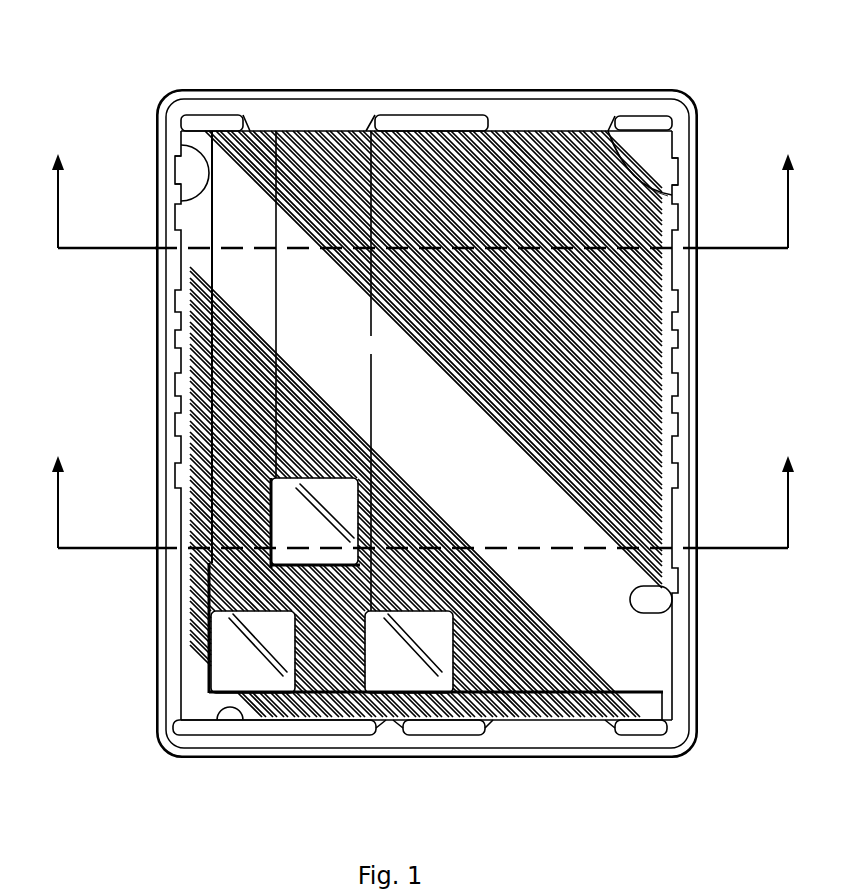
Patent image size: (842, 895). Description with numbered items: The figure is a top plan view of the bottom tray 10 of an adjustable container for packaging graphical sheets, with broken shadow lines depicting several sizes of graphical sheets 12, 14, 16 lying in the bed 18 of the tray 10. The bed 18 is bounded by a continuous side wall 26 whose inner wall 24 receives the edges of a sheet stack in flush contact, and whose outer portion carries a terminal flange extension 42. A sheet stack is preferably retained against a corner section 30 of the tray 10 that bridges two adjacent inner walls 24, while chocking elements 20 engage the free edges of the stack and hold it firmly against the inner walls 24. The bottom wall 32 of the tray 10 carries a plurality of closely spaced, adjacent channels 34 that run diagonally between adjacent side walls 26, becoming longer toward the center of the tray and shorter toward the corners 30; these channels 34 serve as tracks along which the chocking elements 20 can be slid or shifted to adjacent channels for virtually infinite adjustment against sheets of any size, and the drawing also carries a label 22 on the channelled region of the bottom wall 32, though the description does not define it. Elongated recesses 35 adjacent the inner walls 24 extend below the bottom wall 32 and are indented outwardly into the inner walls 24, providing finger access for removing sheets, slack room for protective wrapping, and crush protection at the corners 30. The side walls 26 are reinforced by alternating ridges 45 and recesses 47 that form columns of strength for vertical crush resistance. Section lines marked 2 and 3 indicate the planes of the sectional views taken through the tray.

The bottom tray 10 is at (726, 343).
The graphical sheet 12 is at (361, 337).
The graphical sheet 14 is at (267, 209).
The graphical sheet 16 is at (647, 687).
The bed 18 is at (652, 160).
The chocking element 20 is at (332, 497).
The ribbed floor section 22 is at (658, 412).
The inner wall 24 is at (186, 186).
The side wall 26 is at (323, 82).
The corner section 30 is at (661, 130).
The bottom wall 32 is at (626, 640).
The channel 34 is at (647, 375).
The recess 35 is at (204, 112).
The terminal flange extension 42 is at (524, 88).
The ridge 45 is at (170, 410).
The recess 47 is at (672, 165).
The section line 2- 2 is at (423, 489).
The section line 3- 3 is at (423, 186).